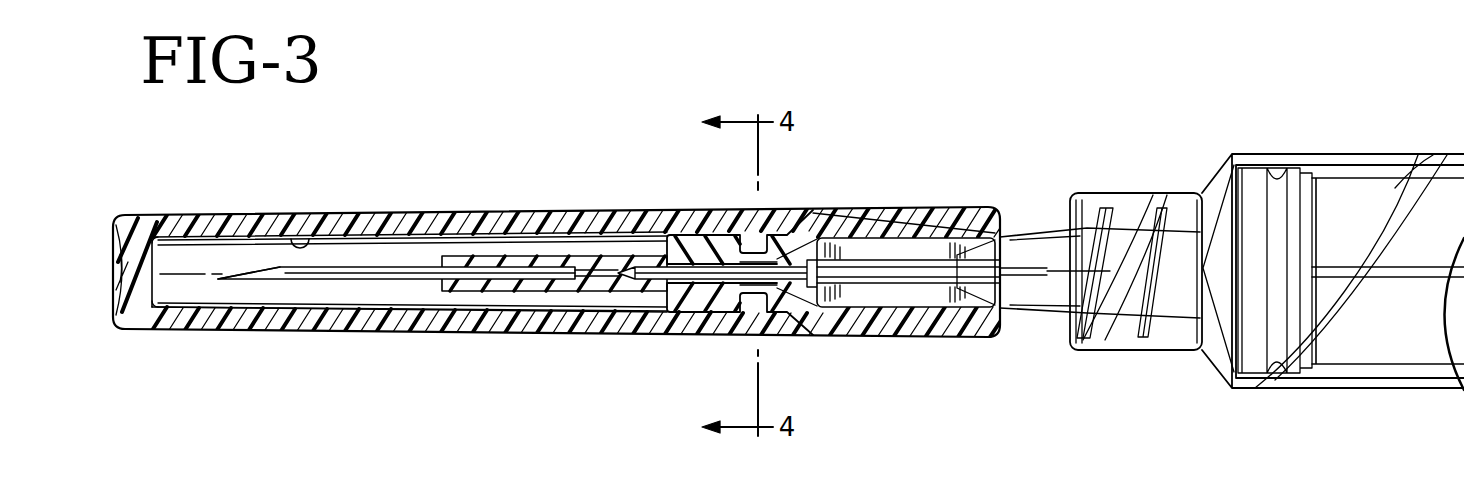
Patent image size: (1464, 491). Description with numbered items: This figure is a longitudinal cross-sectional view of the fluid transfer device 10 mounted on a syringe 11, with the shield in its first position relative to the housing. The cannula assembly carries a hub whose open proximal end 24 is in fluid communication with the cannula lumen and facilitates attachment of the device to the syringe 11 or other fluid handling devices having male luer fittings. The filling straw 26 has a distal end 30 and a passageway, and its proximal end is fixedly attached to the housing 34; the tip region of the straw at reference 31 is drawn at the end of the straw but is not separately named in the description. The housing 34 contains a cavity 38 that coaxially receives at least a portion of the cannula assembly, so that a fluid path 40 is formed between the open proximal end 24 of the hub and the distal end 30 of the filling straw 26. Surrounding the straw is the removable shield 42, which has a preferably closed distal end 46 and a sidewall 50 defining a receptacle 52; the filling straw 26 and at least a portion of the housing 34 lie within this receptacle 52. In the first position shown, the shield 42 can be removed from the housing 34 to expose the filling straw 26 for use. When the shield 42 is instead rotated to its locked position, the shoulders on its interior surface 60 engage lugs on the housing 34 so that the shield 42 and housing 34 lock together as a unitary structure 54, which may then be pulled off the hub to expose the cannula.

The fluid transfer device 10 is at (877, 393).
The syringe 11 is at (1242, 154).
The open proximal end 24 is at (1005, 225).
The filling straw 26 is at (548, 256).
The distal end 30 is at (222, 273).
The needle tip 31 is at (243, 282).
The housing 34 is at (925, 208).
The cavity 38 is at (815, 208).
The fluid path 40 is at (402, 268).
The removable shield 42 is at (477, 222).
The closed distal end 46 is at (113, 216).
The sidewall 50 is at (372, 218).
The receptacle 52 is at (328, 300).
The unitary structure 54 is at (630, 211).
The interior surface 60 is at (300, 240).